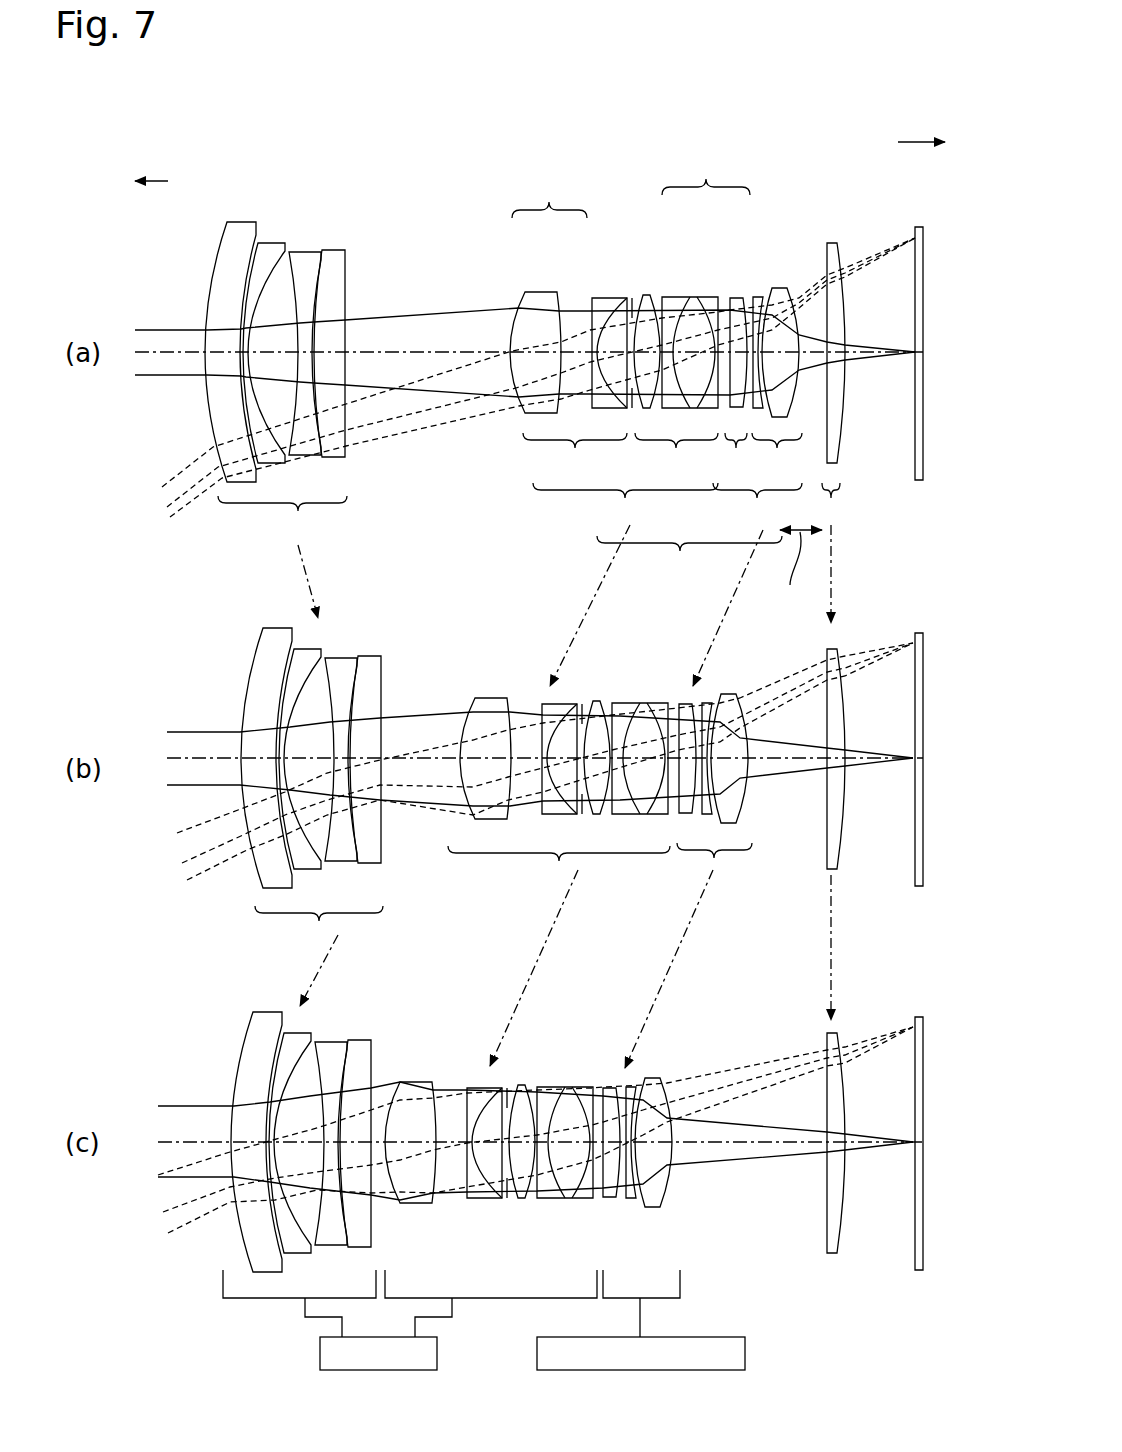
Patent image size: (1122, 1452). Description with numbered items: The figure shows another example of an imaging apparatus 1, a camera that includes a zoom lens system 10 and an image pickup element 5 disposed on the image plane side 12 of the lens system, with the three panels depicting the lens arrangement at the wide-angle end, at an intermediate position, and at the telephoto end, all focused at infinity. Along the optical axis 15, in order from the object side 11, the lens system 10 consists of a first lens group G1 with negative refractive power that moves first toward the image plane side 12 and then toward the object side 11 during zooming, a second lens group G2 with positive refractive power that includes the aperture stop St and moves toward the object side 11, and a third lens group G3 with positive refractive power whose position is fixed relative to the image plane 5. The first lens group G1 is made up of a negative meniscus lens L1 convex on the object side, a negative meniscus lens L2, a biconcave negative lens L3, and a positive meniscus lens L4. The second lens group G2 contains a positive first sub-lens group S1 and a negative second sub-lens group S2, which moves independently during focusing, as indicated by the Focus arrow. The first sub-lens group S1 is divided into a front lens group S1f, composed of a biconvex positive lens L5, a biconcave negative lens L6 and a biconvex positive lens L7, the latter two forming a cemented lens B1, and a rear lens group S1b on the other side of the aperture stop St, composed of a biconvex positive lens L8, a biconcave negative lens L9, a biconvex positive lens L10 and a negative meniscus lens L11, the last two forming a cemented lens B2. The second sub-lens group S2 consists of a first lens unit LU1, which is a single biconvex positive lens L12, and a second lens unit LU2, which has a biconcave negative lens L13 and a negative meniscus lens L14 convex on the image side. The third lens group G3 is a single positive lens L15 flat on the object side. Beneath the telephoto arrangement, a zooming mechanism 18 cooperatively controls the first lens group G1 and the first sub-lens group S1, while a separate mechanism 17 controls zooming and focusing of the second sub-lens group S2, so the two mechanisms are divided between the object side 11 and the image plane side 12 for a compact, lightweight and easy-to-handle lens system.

The imaging apparatus 1 is at (717, 132).
The image pickup element 5 is at (920, 227).
The zoom lens system 10 is at (590, 157).
The object side 11 is at (168, 181).
The image plane side 12 is at (922, 142).
The optical axis 15 is at (180, 353).
The mechanism for controlling zooming and focusing 17 is at (745, 1352).
The zooming mechanism 18 is at (437, 1352).
The meniscus lens L1 is at (246, 230).
The meniscus lens L2 is at (270, 252).
The biconcave negative lens L3 is at (298, 260).
The meniscus lens L4 is at (338, 253).
The biconvex positive lens L5 is at (548, 300).
The biconcave negative lens L6 is at (603, 302).
The biconvex positive lens L7 is at (623, 303).
The biconvex positive lens L8 is at (642, 300).
The biconcave negative lens L9 is at (673, 302).
The biconvex positive lens L10 is at (697, 302).
The negative meniscus lens L11 is at (708, 302).
The biconvex positive lens L12 is at (737, 303).
The biconcave negative lens L13 is at (760, 303).
The negative meniscus lens L14 is at (785, 297).
The positive lens L15 is at (833, 263).
The aperture stop St is at (635, 307).
The first lens group G1 is at (282, 519).
The second lens group G2 is at (689, 559).
The third lens group G3 is at (833, 505).
The first sub-lens group S1 is at (625, 505).
The second sub-lens group S2 is at (757, 505).
The front lens group S1f is at (575, 458).
The rear lens group S1b is at (676, 458).
The first lens unit LU1 is at (734, 458).
The second lens unit LU2 is at (778, 458).
The cemented lens B1 is at (549, 197).
The cemented lens B2 is at (706, 174).
The focusing movement Focus is at (786, 569).